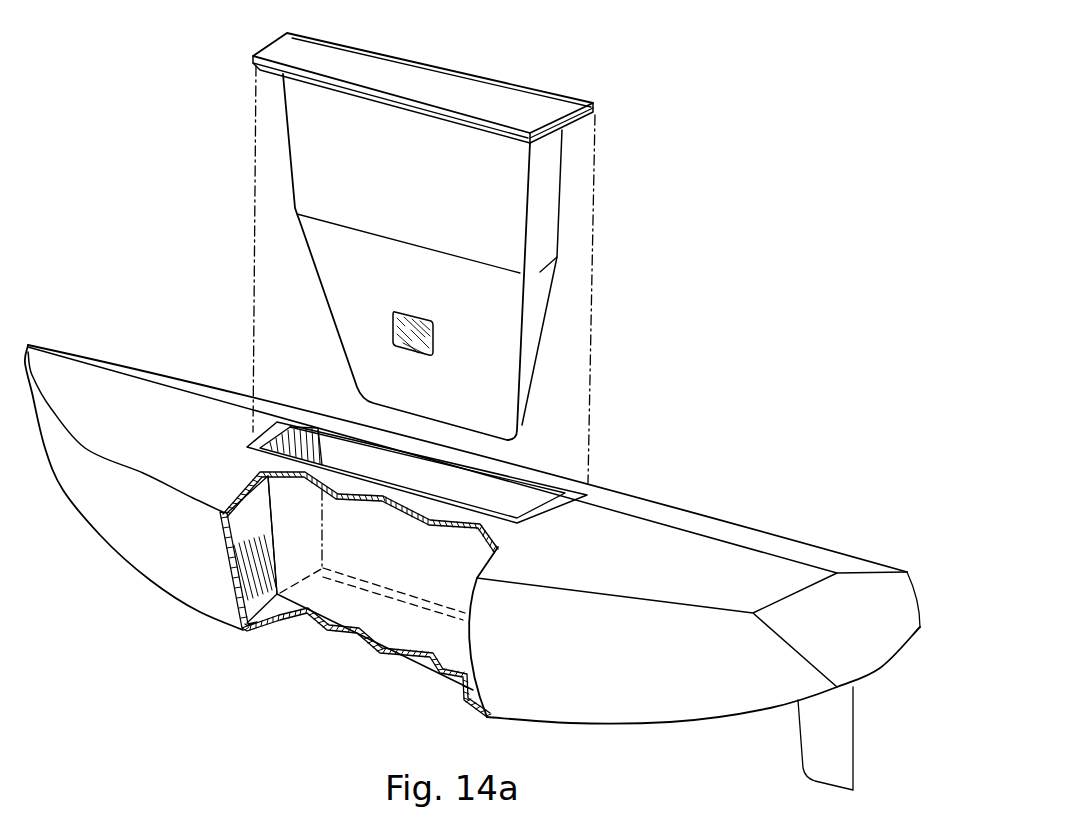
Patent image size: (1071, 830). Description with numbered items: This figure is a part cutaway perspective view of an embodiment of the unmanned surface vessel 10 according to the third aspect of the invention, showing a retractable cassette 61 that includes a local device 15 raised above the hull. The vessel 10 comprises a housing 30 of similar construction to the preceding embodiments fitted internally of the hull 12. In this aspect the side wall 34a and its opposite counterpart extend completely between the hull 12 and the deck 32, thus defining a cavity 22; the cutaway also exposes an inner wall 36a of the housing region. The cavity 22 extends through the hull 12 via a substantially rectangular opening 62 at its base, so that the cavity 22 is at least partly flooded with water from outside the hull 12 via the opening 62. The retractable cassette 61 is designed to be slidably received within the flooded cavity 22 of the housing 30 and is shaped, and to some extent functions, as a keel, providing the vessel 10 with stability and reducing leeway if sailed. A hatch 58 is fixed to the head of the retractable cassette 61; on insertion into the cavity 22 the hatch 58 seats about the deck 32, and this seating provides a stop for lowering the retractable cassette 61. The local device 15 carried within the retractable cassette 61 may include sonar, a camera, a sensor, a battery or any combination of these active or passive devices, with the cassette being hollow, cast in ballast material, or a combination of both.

The unmanned surface vessel 10 is at (720, 417).
The hull 12 is at (205, 592).
The local device 15 is at (440, 327).
The cavity 22 is at (483, 492).
The housing 30 is at (252, 528).
The deck 32 is at (780, 540).
The side wall 34a is at (423, 560).
The compartment inner wall 36a is at (257, 575).
The hatch 58 is at (523, 102).
The retractable cassette 61 is at (498, 197).
The opening 62 is at (387, 613).